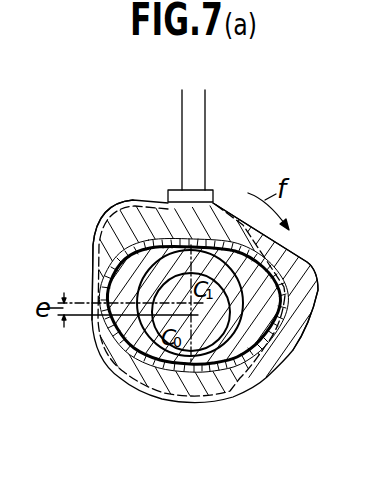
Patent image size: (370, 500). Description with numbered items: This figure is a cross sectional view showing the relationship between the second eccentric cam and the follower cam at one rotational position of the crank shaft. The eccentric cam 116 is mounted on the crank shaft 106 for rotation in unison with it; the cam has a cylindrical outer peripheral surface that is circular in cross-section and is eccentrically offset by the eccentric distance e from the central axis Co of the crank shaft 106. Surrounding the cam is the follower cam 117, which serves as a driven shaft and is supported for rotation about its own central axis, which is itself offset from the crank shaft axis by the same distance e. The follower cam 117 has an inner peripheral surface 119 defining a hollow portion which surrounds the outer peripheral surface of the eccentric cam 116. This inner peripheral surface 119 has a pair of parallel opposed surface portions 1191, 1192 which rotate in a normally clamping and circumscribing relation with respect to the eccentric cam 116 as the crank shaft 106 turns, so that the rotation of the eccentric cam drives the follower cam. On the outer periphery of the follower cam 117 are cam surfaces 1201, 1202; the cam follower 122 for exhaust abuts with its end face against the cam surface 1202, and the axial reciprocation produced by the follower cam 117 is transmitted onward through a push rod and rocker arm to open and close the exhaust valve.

The crank shaft 106 is at (222, 346).
The eccentric cam 116 is at (196, 203).
The follower cam 117 is at (247, 372).
The inner peripheral surface 119 is at (110, 281).
The opposed surface portion 1191 is at (178, 359).
The opposed surface portion 1192 is at (170, 203).
The cam surface 1201 is at (113, 197).
The cam surface 1202 is at (309, 266).
The cam follower 122 is at (198, 133).